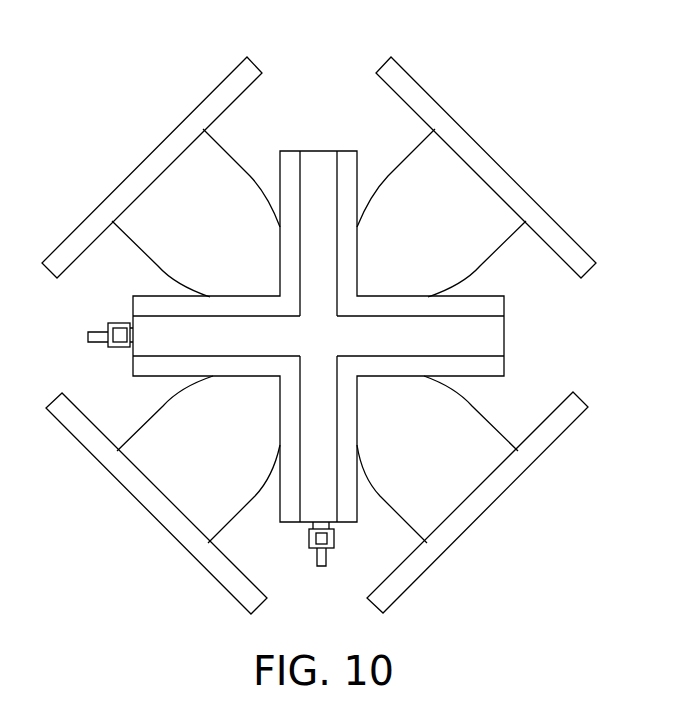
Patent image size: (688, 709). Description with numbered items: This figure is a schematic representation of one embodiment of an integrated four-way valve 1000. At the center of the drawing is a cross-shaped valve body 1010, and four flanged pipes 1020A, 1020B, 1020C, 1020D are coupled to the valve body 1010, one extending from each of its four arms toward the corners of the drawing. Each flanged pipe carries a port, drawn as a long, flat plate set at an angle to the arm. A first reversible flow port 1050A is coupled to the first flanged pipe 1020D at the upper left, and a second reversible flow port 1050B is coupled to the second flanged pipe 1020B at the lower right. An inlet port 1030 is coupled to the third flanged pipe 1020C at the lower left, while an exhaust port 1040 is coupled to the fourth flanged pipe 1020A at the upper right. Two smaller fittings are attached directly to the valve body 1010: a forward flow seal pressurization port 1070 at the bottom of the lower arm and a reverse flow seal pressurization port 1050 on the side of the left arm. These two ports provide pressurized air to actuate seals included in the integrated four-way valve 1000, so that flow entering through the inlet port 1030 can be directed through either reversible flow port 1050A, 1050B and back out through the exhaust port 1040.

The integrated four-way valve 1000 is at (502, 62).
The valve body 1010 is at (445, 337).
The fourth flanged pipe 1020A is at (447, 220).
The flanged pipe 1020B is at (458, 418).
The third flanged pipe 1020C is at (168, 423).
The first flanged pipe 1020D is at (165, 248).
The inlet port 1030 is at (143, 497).
The exhaust port 1040 is at (479, 145).
The reverse flow seal pressurization port 1050 is at (88, 343).
The first reversible flow port 1050A is at (138, 161).
The second reversible flow port 1050B is at (493, 501).
The forward flow seal pressurization port 1070 is at (310, 537).